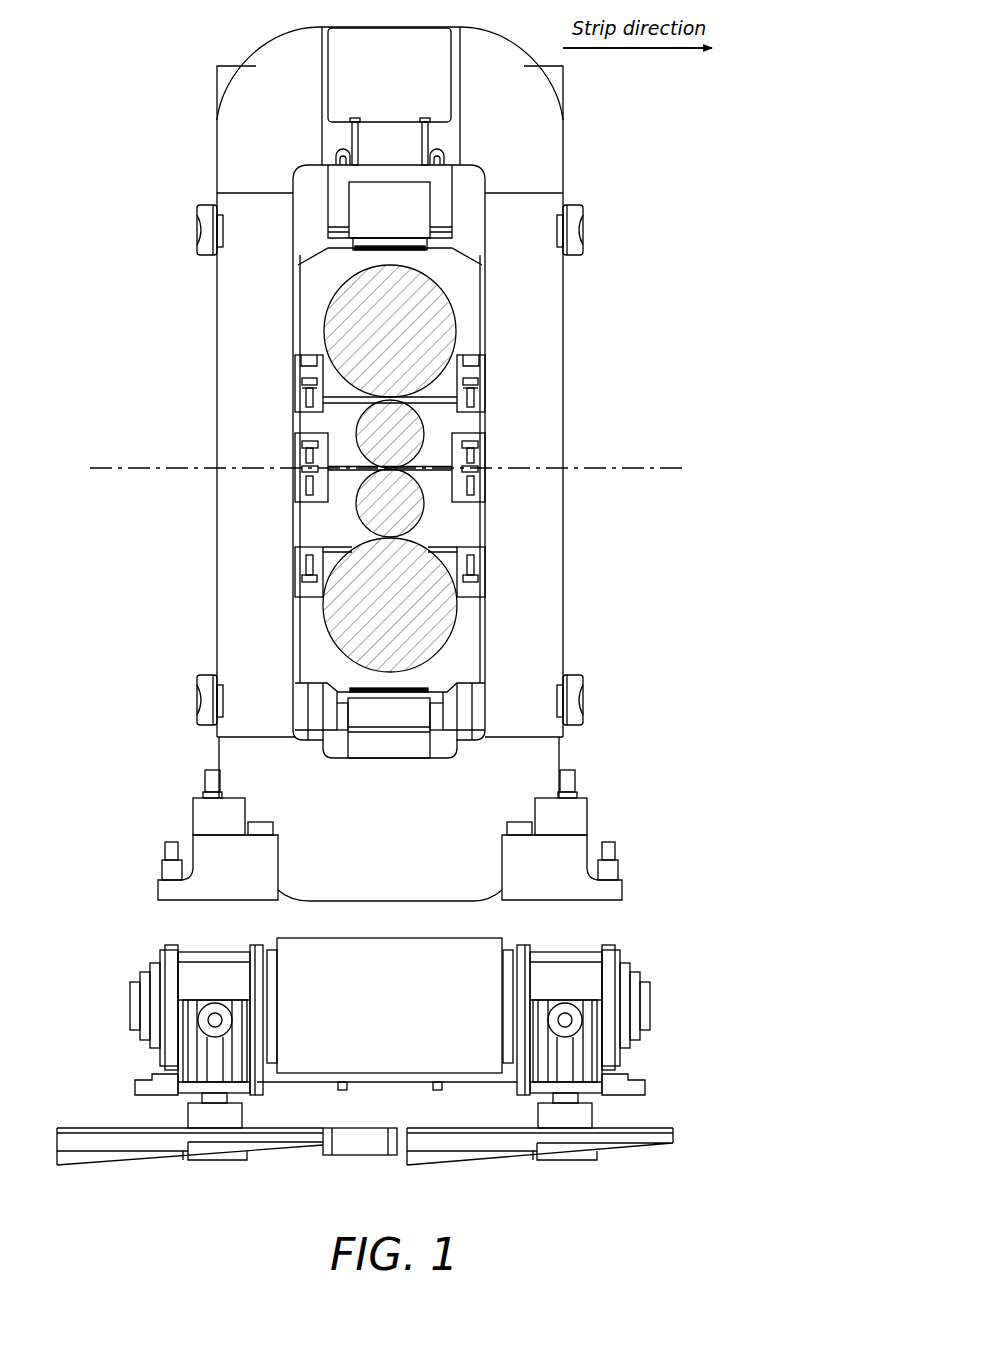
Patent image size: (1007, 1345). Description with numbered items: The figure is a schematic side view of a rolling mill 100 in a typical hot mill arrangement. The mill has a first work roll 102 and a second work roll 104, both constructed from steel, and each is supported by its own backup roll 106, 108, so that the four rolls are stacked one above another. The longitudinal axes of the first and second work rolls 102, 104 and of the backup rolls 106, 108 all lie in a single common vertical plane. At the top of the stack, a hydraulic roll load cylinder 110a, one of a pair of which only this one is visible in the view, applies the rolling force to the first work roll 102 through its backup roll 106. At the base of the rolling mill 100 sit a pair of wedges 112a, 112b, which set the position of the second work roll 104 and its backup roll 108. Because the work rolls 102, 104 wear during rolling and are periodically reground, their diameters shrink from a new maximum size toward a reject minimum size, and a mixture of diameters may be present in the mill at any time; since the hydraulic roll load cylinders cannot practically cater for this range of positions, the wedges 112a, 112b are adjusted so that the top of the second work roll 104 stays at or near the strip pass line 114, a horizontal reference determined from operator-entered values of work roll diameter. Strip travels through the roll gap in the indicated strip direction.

The rolling mill 100 is at (168, 73).
The first work roll 102 is at (368, 428).
The second work roll 104 is at (368, 520).
The backup roll 106 is at (335, 317).
The backup roll 108 is at (335, 632).
The hydraulic roll load cylinder 110a is at (390, 192).
The wedge 112a is at (330, 744).
The wedge 112b is at (442, 1147).
The strip pass line 114 is at (638, 467).